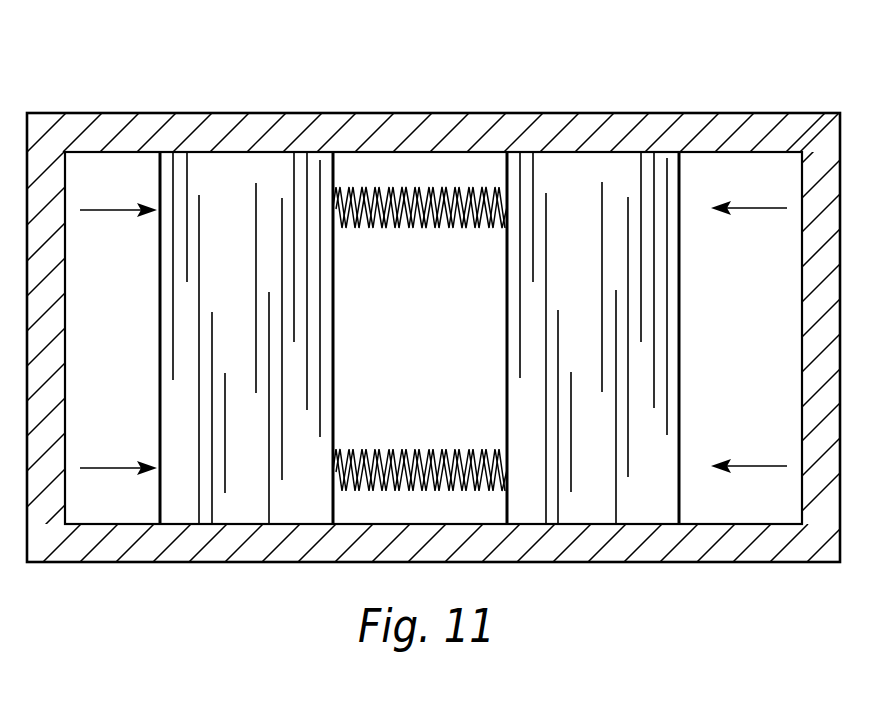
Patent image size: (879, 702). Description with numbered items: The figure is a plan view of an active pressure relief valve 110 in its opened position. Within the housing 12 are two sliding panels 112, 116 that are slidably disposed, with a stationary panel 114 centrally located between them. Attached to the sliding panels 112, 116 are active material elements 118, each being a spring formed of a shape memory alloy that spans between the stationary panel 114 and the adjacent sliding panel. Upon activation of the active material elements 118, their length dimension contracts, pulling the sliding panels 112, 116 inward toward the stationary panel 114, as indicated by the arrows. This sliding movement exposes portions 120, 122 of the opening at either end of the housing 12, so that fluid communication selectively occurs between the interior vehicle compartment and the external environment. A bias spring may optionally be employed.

The active pressure relief valve 110 is at (436, 325).
The housing 12 is at (703, 113).
The sliding panel 112 is at (247, 455).
The stationary panel 114 is at (438, 349).
The sliding panel 116 is at (600, 470).
The active material element 118 is at (416, 229).
The exposed portion of opening 120 is at (132, 350).
The exposed portion of opening 122 is at (759, 350).